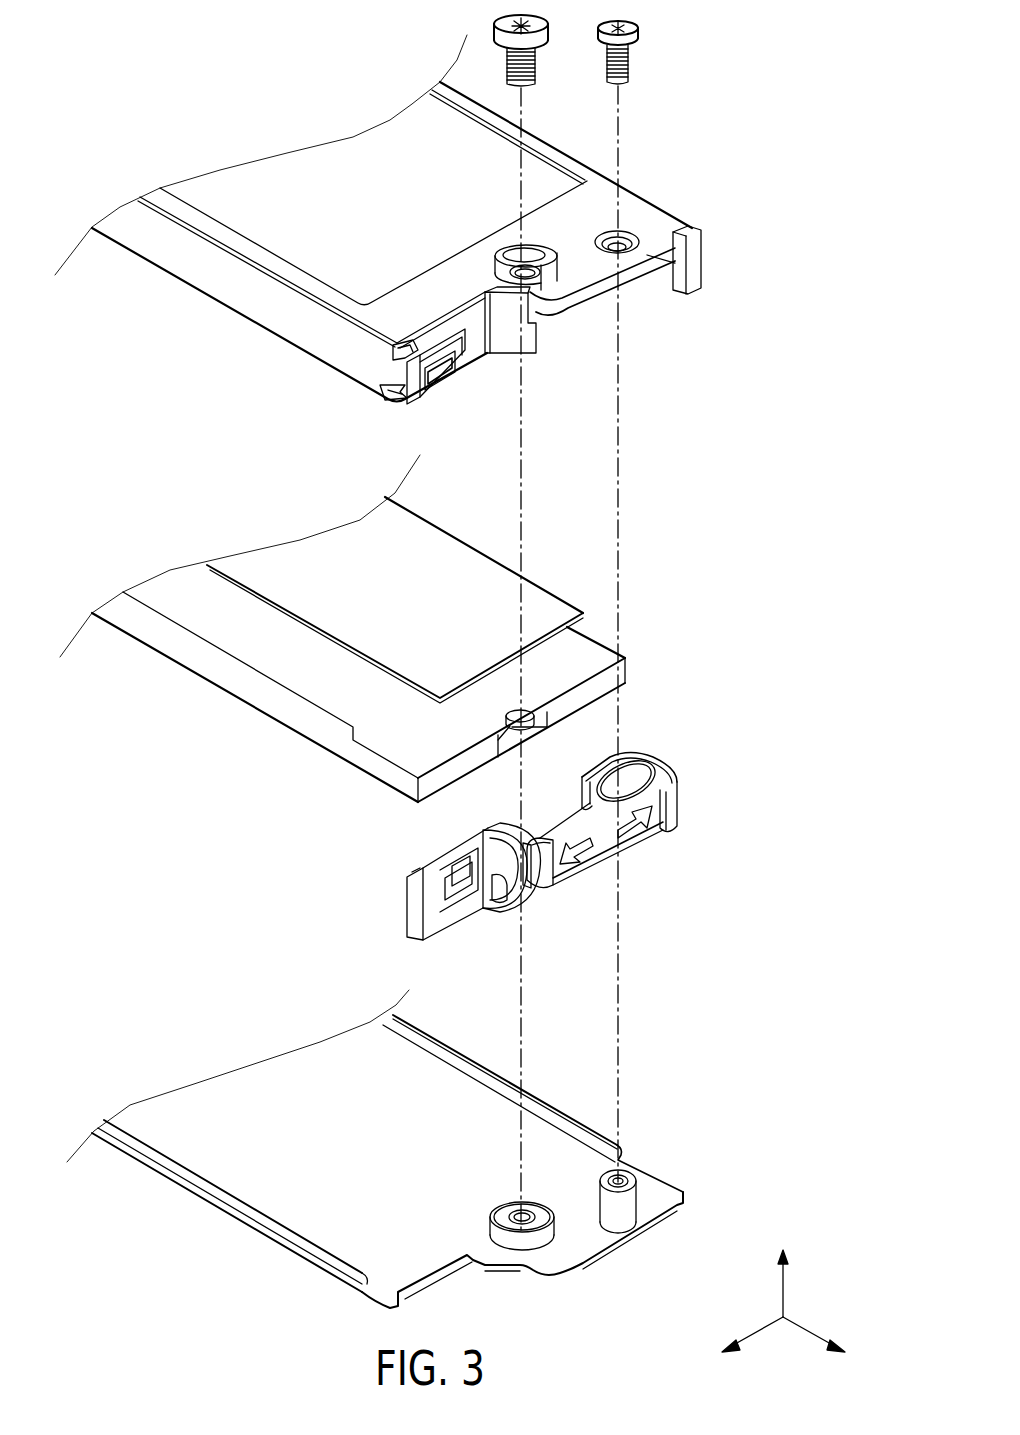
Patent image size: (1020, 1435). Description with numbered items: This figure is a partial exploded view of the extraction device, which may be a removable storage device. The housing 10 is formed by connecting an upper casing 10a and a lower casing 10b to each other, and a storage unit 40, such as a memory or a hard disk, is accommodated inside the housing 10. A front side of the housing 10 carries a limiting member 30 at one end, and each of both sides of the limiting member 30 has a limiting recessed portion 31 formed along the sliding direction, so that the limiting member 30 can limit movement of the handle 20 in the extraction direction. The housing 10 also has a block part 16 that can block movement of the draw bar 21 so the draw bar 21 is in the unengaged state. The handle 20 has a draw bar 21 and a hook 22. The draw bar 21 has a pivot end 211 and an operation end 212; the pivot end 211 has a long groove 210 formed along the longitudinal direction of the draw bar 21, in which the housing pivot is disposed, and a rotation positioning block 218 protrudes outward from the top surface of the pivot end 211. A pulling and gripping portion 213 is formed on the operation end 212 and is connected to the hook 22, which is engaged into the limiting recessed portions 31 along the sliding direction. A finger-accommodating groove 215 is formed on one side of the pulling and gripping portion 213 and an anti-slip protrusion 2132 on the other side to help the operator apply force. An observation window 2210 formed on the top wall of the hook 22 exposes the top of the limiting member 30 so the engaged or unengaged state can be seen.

The housing 10 is at (678, 216).
The upper casing 10a is at (637, 210).
The lower casing 10b is at (601, 1250).
The block part 16 is at (508, 342).
The limiting member 30 is at (440, 386).
The limiting recessed portion 31 is at (400, 343).
The storage unit 40 is at (272, 700).
The handle 20 is at (672, 767).
The draw bar 21 is at (630, 845).
The long groove 210 is at (636, 772).
The pivot end 211 is at (655, 760).
The rotation positioning block 218 is at (674, 810).
The operation end 212 is at (548, 882).
The hook 22 is at (426, 858).
The observation window 2210 is at (474, 864).
The pulling and gripping portion 213 is at (507, 910).
The anti-slip protrusion 2132 is at (490, 893).
The finger-accommodating groove 215 is at (529, 898).